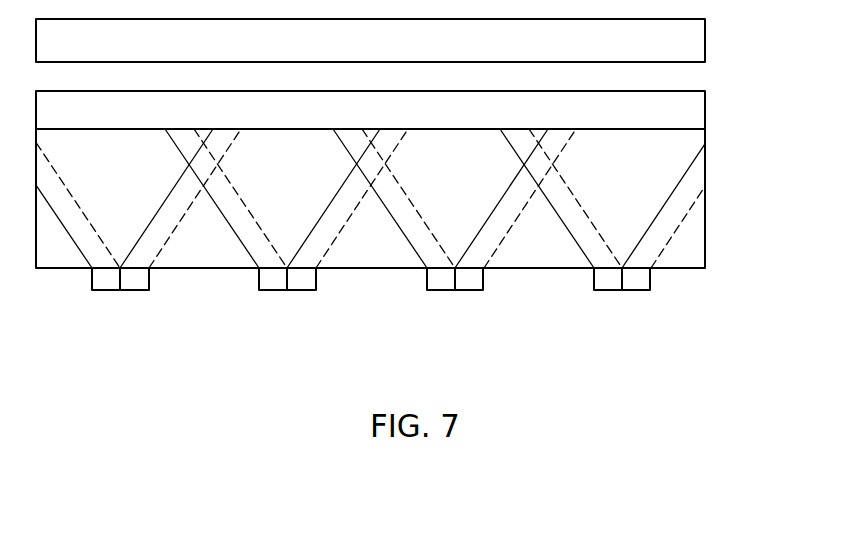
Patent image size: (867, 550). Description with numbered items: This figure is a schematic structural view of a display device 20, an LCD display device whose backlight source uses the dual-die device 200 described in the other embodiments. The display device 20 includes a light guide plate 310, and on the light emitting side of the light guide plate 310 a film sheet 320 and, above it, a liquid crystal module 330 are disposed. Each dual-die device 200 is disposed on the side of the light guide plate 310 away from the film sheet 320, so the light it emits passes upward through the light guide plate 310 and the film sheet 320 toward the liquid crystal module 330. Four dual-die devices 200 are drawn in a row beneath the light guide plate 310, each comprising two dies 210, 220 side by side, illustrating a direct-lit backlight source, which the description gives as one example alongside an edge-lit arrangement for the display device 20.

The liquid crystal module 330 is at (413, 40).
The film sheet 320 is at (413, 110).
The light guide plate 310 is at (413, 198).
The dual-die device 200 is at (92, 309).
The second light emitting part 220 is at (231, 309).
The first light emitting part 210 is at (342, 309).
The display device 20 is at (608, 309).